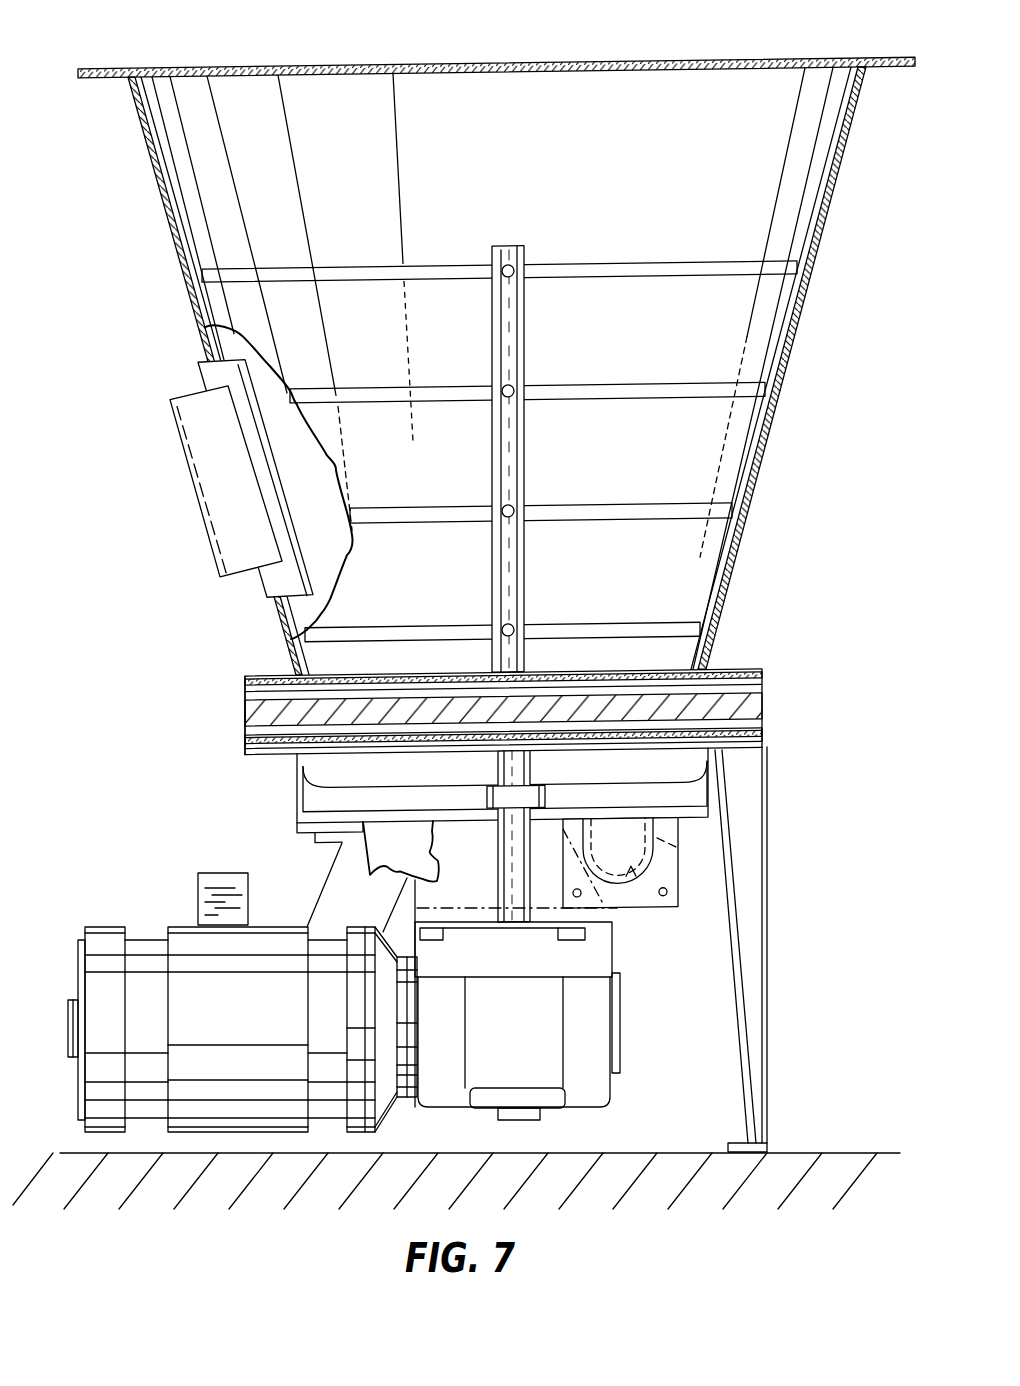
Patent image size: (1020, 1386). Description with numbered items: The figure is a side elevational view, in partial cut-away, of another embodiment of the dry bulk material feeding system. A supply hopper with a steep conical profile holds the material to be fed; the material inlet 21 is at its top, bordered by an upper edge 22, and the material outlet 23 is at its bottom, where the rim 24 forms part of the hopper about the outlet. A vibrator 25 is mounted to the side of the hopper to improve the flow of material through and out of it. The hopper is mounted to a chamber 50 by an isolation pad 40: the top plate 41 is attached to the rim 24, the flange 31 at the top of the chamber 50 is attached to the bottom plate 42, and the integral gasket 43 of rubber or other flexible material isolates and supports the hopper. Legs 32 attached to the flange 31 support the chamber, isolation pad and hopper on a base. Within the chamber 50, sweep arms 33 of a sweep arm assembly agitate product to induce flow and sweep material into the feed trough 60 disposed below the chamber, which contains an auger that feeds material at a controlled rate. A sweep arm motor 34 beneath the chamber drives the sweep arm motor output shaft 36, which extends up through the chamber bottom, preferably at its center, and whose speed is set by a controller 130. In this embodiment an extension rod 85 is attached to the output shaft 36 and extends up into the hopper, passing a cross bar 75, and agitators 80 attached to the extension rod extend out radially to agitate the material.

The material inlet 21 is at (442, 64).
The hopper top rim flange 22 is at (496, 67).
The material outlet 23 is at (672, 668).
The rim 24 is at (243, 676).
The vibrator 25 is at (200, 498).
The flange 31 is at (764, 748).
The legs 32 is at (760, 1058).
The sweep arms 33 is at (695, 797).
The sweep arm motor 34 is at (265, 1079).
The sweep arm motor output shaft 36 is at (511, 866).
The isolation pad 40 is at (514, 707).
The top plate 41 is at (763, 684).
The bottom plate 42 is at (763, 728).
The integral gasket 43 is at (763, 708).
The chamber 50 is at (515, 815).
The feed trough 60 is at (633, 878).
The cross bar 75 is at (530, 772).
The agitators 80 is at (616, 265).
The extension rod 85 is at (515, 250).
The controller 130 is at (200, 882).